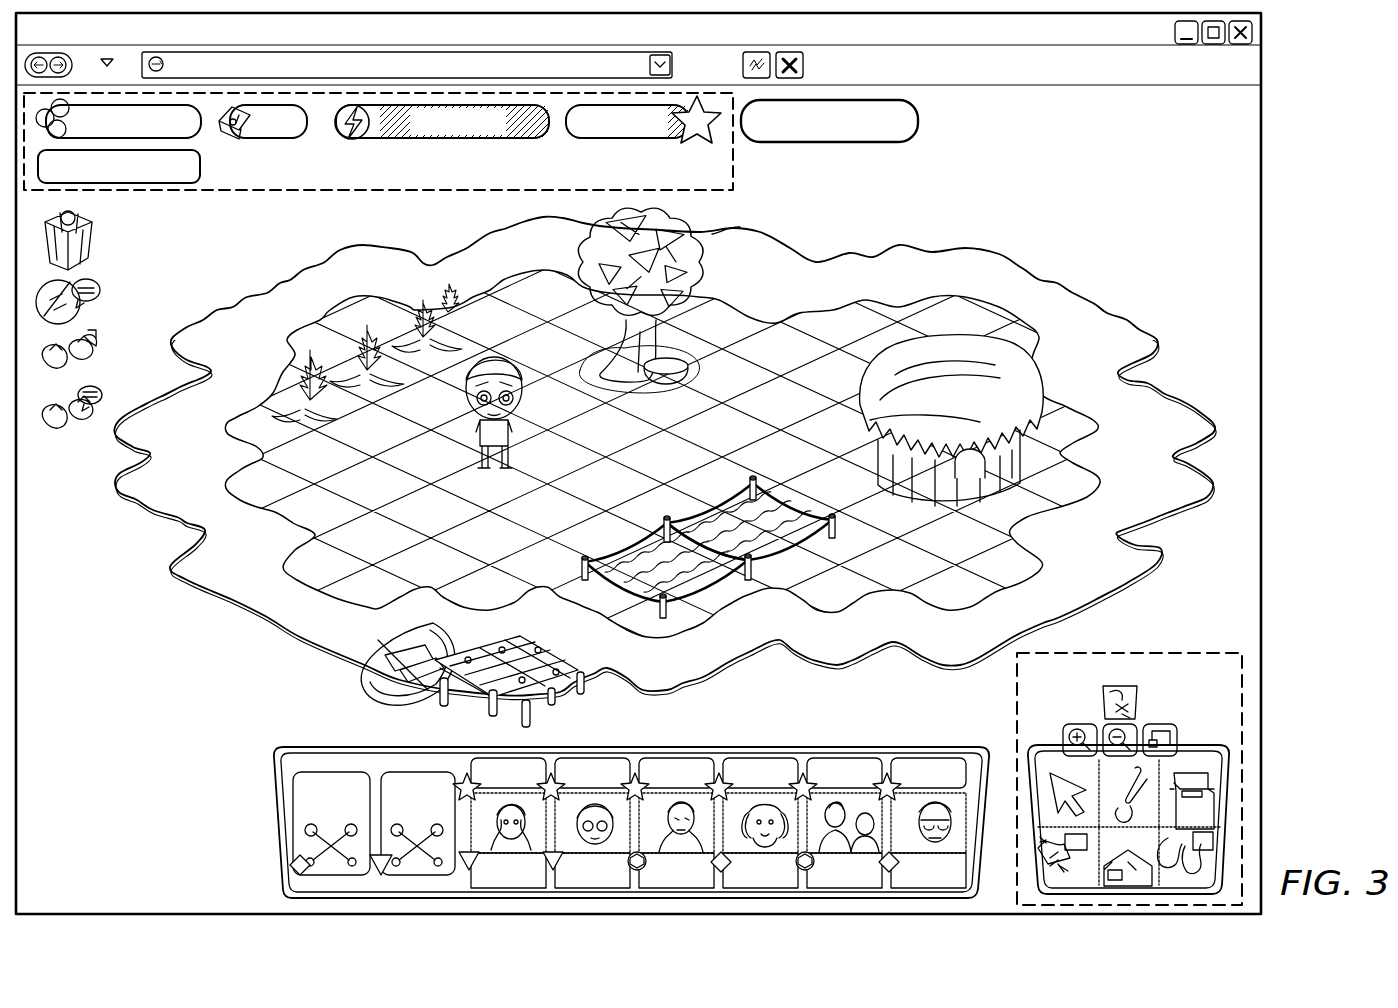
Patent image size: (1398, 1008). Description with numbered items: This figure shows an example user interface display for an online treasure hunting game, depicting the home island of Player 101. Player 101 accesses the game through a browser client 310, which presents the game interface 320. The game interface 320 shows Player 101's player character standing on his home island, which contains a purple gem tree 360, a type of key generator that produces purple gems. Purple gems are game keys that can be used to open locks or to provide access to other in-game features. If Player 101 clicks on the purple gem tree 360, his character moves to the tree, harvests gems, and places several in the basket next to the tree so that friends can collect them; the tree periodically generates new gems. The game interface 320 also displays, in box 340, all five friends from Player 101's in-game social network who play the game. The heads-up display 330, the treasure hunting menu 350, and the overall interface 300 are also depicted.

The game interface 300 is at (688, 469).
The browser client 310 is at (1268, 65).
The game interface 320 is at (683, 469).
The heads-up display 330 is at (742, 164).
The box 340 is at (326, 742).
The treasure hunting menu 350 is at (1196, 647).
The purple gem tree 360 is at (704, 318).
The Player 101 is at (522, 442).